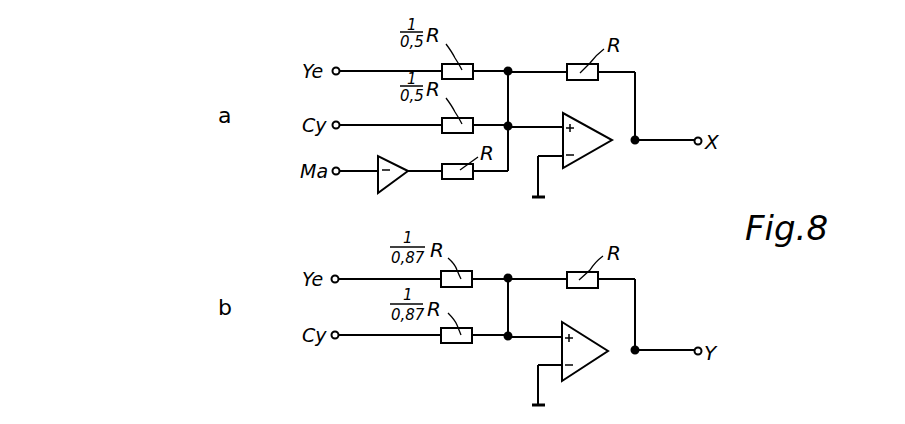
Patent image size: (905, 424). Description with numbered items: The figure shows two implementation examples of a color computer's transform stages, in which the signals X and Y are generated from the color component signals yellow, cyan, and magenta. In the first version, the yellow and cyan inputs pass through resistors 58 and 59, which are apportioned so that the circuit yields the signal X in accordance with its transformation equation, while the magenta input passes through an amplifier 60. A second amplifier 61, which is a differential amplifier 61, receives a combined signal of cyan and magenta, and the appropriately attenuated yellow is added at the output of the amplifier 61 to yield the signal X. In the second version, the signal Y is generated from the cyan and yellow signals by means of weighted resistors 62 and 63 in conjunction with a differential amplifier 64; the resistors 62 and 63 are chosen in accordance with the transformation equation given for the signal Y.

In FIG. 8a, the resistor 58 is at (470, 69).
In FIG. 8a, the resistor 59 is at (466, 124).
In FIG. 8a, the amplifier 60 is at (392, 180).
In FIG. 8a, the differential amplifier 61 is at (588, 145).
In FIG. 8b, the weighted resistor 62 is at (465, 275).
In FIG. 8b, the weighted resistor 63 is at (462, 343).
In FIG. 8b, the differential amplifier 64 is at (588, 353).